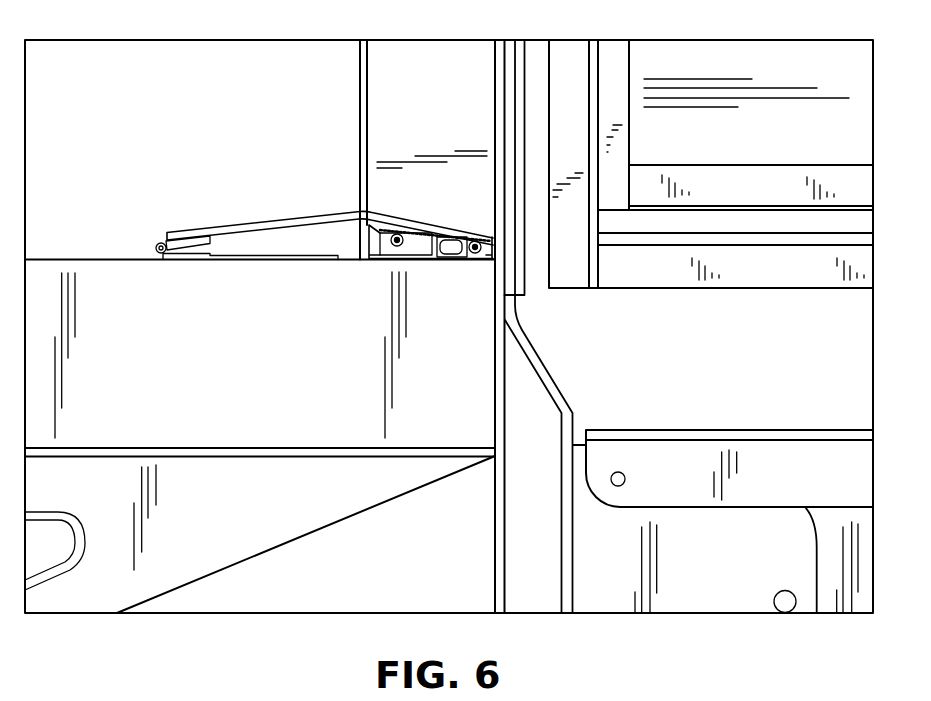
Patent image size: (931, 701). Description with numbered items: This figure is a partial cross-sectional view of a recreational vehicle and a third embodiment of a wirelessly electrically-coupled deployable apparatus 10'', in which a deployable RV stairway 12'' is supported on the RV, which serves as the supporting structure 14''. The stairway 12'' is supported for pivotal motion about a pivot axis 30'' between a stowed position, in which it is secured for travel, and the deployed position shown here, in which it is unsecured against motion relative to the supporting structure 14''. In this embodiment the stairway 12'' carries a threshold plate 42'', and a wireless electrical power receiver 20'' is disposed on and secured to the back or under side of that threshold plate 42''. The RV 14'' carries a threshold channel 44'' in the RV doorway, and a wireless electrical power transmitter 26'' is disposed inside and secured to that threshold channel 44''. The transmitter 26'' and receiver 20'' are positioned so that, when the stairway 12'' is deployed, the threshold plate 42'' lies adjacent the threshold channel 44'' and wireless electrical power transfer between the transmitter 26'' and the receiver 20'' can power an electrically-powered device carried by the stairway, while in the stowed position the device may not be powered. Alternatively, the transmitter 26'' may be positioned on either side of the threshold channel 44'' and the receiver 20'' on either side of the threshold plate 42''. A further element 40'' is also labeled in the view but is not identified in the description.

The wirelessly electrically-coupled deployable apparatus 10'' is at (449, 326).
The supporting structure (RV) 14'' is at (321, 150).
The wireless electrical power receiver 20'' is at (330, 204).
The pivot axis 30'' is at (154, 230).
The threshold plate 42'' is at (431, 217).
The wireless electrical power transmitter 26'' is at (377, 268).
The threshold channel 44'' is at (449, 275).
The deployable structure (RV stairway) 12'' is at (574, 326).
The support column 40'' is at (466, 326).